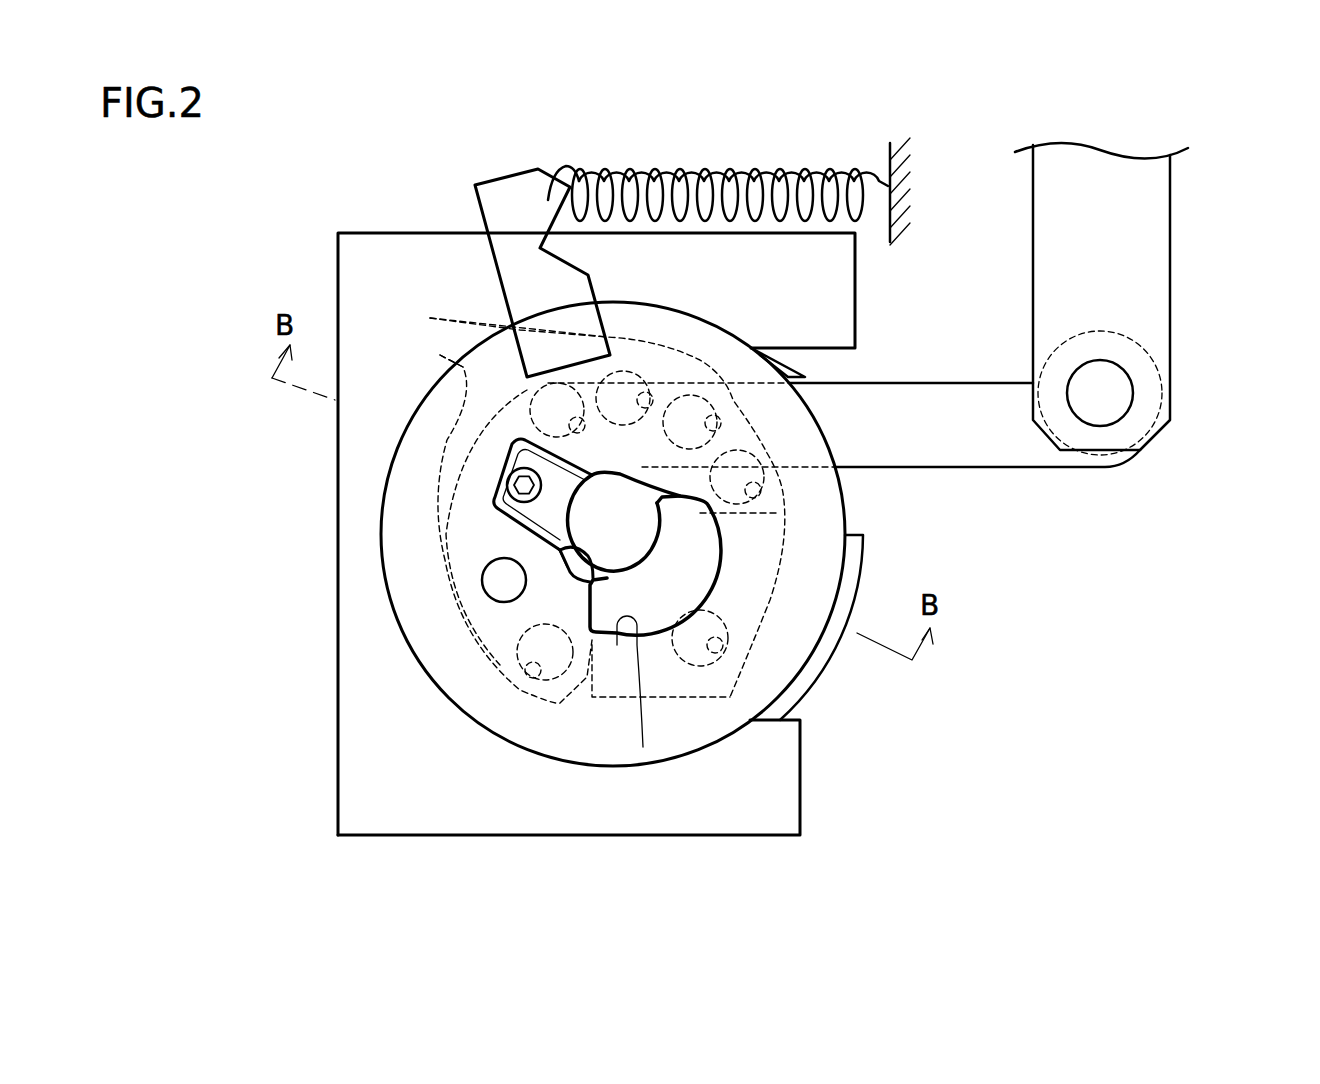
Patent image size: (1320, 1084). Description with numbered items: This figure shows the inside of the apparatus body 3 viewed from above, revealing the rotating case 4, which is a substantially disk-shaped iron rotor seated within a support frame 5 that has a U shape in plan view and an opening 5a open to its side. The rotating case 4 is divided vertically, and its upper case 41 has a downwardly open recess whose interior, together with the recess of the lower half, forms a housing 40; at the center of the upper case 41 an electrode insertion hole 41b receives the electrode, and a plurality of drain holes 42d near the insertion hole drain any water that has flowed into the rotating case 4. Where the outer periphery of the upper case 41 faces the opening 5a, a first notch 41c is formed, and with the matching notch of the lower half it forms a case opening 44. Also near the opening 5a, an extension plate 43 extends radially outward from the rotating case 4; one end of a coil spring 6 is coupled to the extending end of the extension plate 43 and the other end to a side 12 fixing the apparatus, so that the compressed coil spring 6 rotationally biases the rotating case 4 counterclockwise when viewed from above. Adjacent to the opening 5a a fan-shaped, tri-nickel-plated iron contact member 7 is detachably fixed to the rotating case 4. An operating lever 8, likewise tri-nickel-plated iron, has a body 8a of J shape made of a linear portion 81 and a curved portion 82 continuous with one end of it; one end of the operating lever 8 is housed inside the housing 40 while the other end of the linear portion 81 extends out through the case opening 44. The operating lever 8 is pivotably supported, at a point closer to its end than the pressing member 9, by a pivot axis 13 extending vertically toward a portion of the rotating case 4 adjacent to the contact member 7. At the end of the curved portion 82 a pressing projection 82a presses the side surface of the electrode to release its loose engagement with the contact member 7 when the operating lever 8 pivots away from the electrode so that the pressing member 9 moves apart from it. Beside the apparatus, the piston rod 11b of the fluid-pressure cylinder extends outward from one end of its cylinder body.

The apparatus body 3 is at (348, 158).
The support frame 5 is at (422, 233).
The opening 5a is at (838, 365).
The coil spring 6 is at (722, 163).
The contact member 7 is at (578, 705).
The operating lever 8 is at (1020, 477).
The body 8a is at (400, 300).
The linear portion 81 is at (502, 317).
The curved portion 82 is at (430, 352).
The pressing projection 82a is at (567, 567).
The pressing member 9 is at (503, 518).
The piston rod 11b is at (1175, 245).
The side fixing the apparatus 12 is at (890, 150).
The pivot axis 13 is at (490, 578).
The housing 40 is at (567, 700).
The upper case 41 is at (677, 757).
The rotating case 4 is at (810, 688).
The electrode insertion hole 41b is at (643, 747).
The first notch 41c is at (848, 520).
The drain holes 42d is at (582, 426).
The extension plate 43 is at (505, 182).
The case opening 44 is at (803, 388).